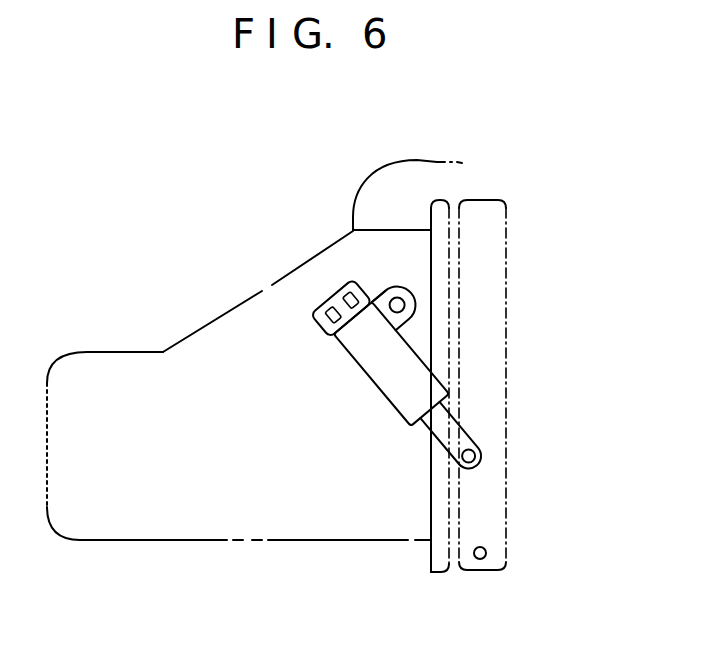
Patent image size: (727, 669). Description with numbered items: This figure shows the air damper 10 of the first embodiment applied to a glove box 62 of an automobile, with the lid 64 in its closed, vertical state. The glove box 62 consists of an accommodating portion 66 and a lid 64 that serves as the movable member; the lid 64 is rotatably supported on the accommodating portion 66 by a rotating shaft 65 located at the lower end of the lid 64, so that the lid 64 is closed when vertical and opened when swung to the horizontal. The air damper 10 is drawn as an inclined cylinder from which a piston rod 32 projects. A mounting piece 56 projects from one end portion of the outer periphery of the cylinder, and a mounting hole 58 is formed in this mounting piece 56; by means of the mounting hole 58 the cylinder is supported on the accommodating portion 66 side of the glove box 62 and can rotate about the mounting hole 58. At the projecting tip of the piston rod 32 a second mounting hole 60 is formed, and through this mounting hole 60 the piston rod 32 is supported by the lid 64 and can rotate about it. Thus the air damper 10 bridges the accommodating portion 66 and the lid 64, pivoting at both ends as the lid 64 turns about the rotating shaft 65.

The air damper 10 is at (362, 372).
The piston rod 32 is at (470, 433).
The mounting piece 56 is at (383, 288).
The mounting hole 58 is at (397, 305).
The mounting hole 60 is at (482, 455).
The glove box 62 is at (572, 147).
The lid 64 is at (507, 288).
The rotating shaft 65 is at (480, 560).
The accommodating portion 66 is at (462, 163).